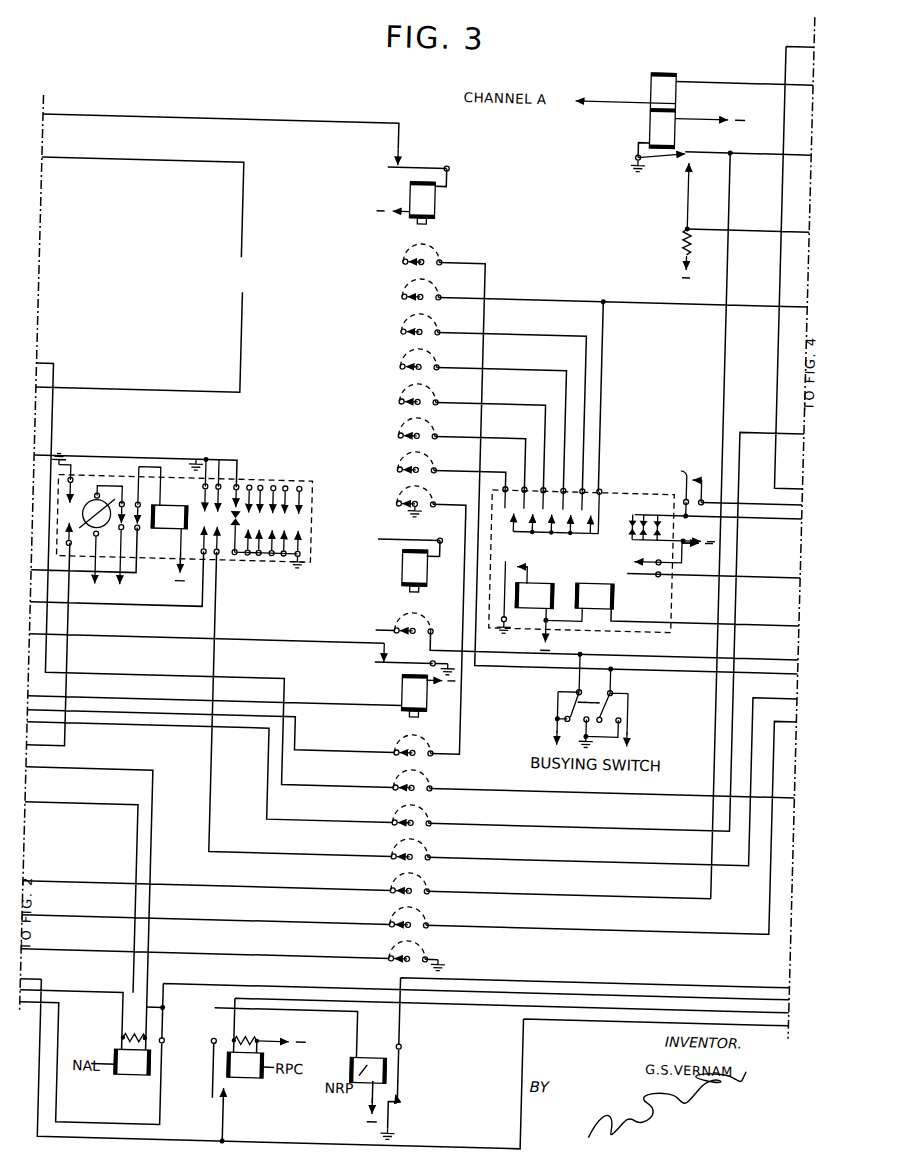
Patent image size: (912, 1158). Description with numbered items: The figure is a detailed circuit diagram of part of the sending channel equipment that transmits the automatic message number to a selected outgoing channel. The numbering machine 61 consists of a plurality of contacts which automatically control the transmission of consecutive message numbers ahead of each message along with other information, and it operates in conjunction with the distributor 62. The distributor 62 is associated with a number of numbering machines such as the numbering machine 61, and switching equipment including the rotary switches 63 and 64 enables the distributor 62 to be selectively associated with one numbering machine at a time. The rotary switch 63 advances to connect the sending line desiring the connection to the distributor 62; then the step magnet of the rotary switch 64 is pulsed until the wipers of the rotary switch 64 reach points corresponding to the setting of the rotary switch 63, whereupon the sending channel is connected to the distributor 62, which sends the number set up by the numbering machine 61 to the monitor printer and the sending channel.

The numbering machine 61 is at (672, 628).
The distributor 62 is at (227, 568).
The rotary switch 63 is at (441, 247).
The rotary switch 64 is at (438, 746).